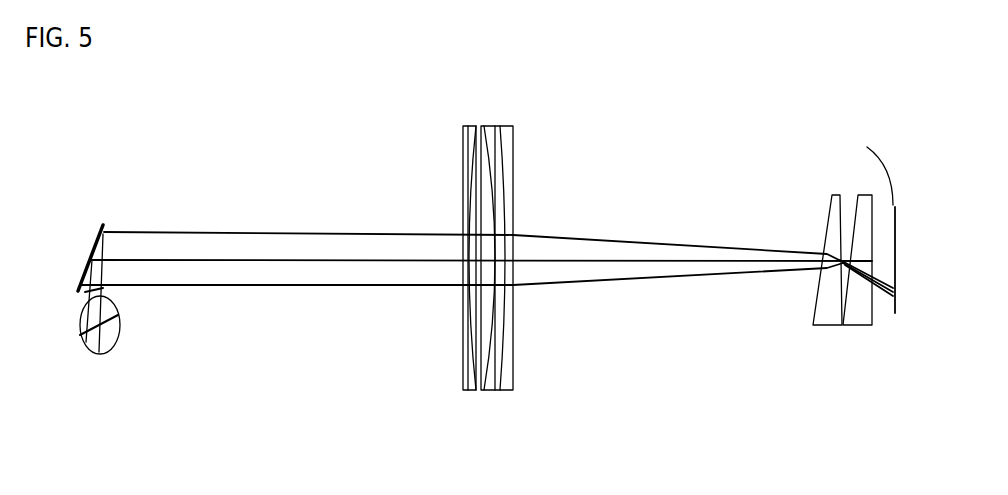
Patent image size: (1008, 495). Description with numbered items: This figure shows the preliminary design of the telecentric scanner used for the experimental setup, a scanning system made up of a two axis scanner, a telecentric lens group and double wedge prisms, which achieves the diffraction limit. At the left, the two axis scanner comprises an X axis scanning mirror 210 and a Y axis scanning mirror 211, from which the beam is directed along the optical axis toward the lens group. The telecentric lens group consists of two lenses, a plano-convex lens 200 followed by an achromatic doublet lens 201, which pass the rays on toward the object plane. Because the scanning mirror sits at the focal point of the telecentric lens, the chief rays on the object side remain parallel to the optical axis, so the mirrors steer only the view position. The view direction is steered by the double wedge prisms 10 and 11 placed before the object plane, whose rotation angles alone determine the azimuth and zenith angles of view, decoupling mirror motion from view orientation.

The wedge prism 10 is at (813, 312).
The wedge prism 11 is at (872, 325).
The plano-convex lens 200 is at (463, 350).
The achromatic doublet lens 201 is at (513, 345).
The X axis scanning mirror 210 is at (83, 338).
The Y axis scanning mirror 211 is at (84, 252).